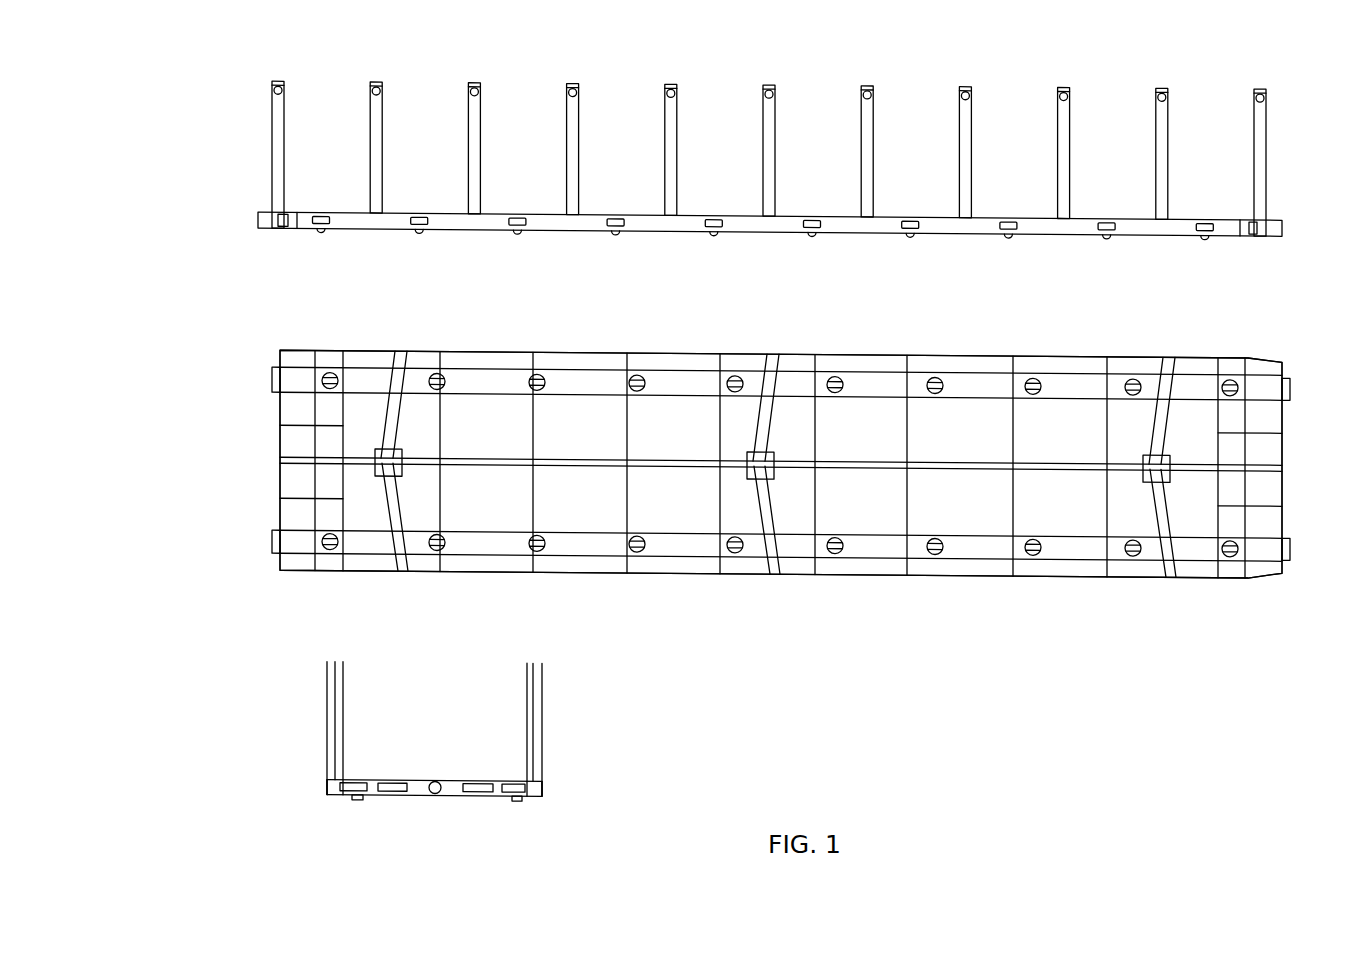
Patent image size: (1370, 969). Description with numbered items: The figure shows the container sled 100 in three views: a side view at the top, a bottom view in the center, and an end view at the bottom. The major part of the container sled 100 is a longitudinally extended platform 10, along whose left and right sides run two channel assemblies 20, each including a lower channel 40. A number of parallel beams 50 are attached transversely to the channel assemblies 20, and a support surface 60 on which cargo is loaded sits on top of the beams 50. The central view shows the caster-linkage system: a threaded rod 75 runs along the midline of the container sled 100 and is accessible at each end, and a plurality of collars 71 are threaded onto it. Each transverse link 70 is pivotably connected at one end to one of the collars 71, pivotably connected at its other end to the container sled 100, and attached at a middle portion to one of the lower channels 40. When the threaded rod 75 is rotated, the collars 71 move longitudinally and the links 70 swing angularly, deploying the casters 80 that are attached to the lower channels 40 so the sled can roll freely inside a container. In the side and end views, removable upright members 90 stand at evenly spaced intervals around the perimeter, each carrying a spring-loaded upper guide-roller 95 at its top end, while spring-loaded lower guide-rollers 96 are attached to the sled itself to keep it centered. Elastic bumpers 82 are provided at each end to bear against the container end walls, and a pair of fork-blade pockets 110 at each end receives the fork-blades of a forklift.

The longitudinally extended platform 10 is at (1284, 233).
The channel assembly 20 is at (1265, 387).
The lower channel 40 is at (874, 388).
The beam 50 is at (331, 358).
The support surface 60 is at (455, 782).
The transverse link 70 is at (400, 546).
The collar 71 is at (381, 476).
The threaded rod 75 is at (560, 466).
The caster 80 is at (518, 234).
The elastic bumper 82 is at (258, 216).
The removable upright member 90 is at (655, 155).
The upper guide-roller 95 is at (958, 95).
The lower guide-roller 96 is at (815, 234).
The container sled 100 is at (258, 494).
The fork-blade pocket 110 is at (460, 795).